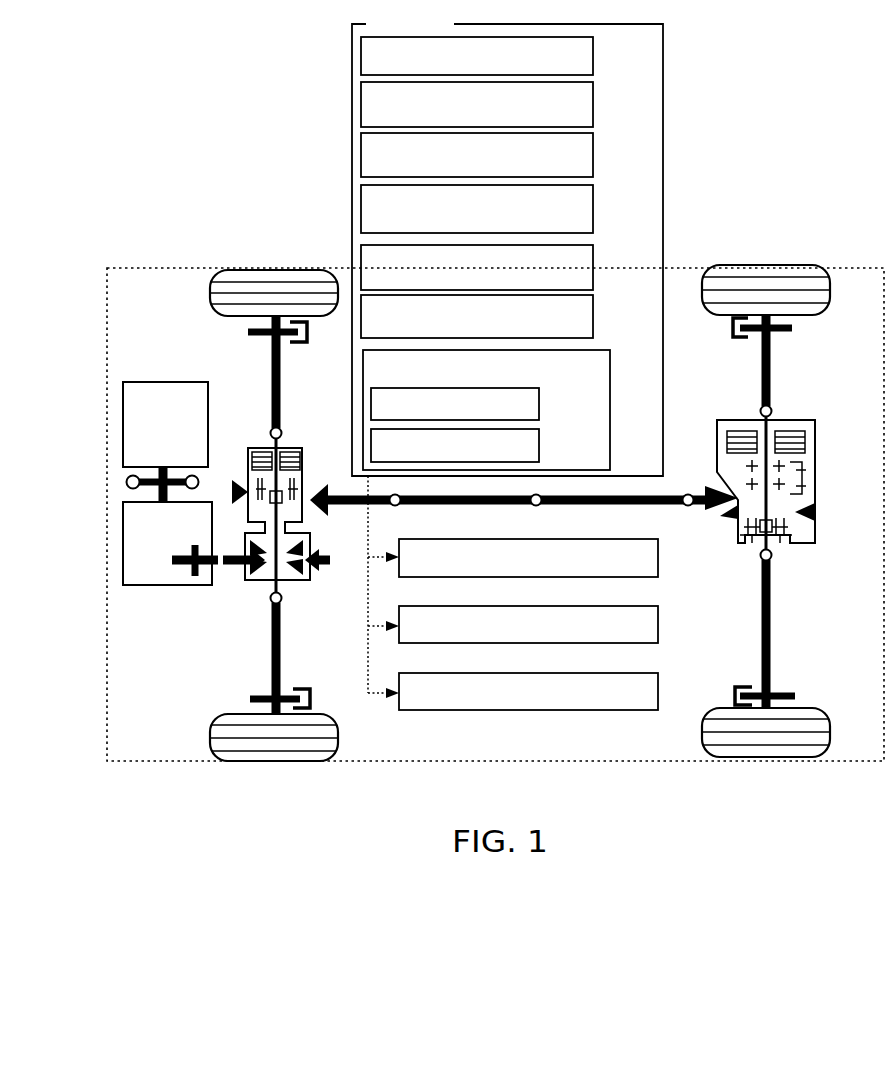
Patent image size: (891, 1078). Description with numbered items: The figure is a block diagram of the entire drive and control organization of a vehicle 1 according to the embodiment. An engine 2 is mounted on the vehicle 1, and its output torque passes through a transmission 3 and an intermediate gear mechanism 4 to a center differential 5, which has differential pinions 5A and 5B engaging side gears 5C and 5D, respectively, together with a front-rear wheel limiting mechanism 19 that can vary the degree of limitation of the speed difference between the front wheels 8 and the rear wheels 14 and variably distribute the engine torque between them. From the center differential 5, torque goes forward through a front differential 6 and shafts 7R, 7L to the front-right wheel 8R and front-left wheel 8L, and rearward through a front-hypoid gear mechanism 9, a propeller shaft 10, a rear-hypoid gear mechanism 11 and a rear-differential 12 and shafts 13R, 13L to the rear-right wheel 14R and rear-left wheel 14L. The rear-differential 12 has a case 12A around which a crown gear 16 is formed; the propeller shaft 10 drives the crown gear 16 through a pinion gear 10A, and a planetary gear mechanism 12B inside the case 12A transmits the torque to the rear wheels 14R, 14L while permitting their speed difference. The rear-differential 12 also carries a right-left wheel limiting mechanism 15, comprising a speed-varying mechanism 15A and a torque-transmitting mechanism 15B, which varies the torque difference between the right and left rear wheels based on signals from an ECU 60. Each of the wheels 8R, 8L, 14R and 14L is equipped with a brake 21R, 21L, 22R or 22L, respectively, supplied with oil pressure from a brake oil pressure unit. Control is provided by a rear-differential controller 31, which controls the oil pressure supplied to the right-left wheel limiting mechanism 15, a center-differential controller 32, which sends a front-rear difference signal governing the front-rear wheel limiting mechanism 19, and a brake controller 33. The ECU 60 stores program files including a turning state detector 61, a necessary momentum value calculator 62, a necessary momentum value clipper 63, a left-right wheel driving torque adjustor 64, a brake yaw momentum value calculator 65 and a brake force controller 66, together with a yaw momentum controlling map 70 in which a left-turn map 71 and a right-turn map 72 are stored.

The vehicle 1 is at (184, 234).
The engine 2 is at (176, 383).
The transmission 3 is at (168, 587).
The intermediate gear mechanism 4 is at (226, 579).
The center differential 5 is at (280, 516).
The differential pinion 5A is at (251, 556).
The differential pinion 5B is at (306, 552).
The side gear 5C is at (288, 577).
The side gear 5D is at (262, 537).
The front differential 6 is at (253, 477).
The shaft 7R is at (272, 413).
The shaft 7L is at (272, 616).
The front wheels 8 is at (251, 544).
The front-right wheel 8R is at (216, 302).
The front-left wheel 8L is at (217, 742).
The front-hypoid gear mechanism 9 is at (318, 480).
The propeller shaft 10 is at (481, 503).
The pinion gear 10A is at (713, 494).
The rear-hypoid gear mechanism 11 is at (724, 532).
The rear-differential 12 is at (783, 479).
The case 12A is at (785, 543).
The planetary gear mechanism 12B is at (752, 543).
The shaft 13R is at (772, 387).
The shaft 13L is at (772, 607).
The rear wheels 14 is at (788, 540).
The rear-right wheel 14R is at (821, 294).
The rear-left wheel 14L is at (827, 737).
The right-left wheel limiting mechanism 15 is at (796, 438).
The speed-varying mechanism 15A is at (808, 467).
The torque-transmitting mechanism 15B is at (811, 433).
The crown gear 16 is at (809, 515).
The front-rear wheel limiting mechanism 19 is at (246, 450).
The brake 21R is at (292, 357).
The brake 21L is at (300, 682).
The brake 22R is at (749, 350).
The brake 22L is at (752, 683).
The rear-differential controller 31 is at (624, 576).
The center-differential controller 32 is at (624, 642).
The brake controller 33 is at (624, 709).
The ECU 60 is at (507, 244).
The turning state detector 61 is at (593, 47).
The necessary momentum value calculator 62 is at (593, 100).
The necessary momentum value clipper 63 is at (593, 152).
The left-right wheel driving torque adjustor 64 is at (593, 203).
The brake yaw momentum value calculator 65 is at (593, 256).
The brake force controller 66 is at (593, 308).
The yaw momentum controlling map 70 is at (610, 382).
The left-turn map 71 is at (539, 392).
The right-turn map 72 is at (539, 435).